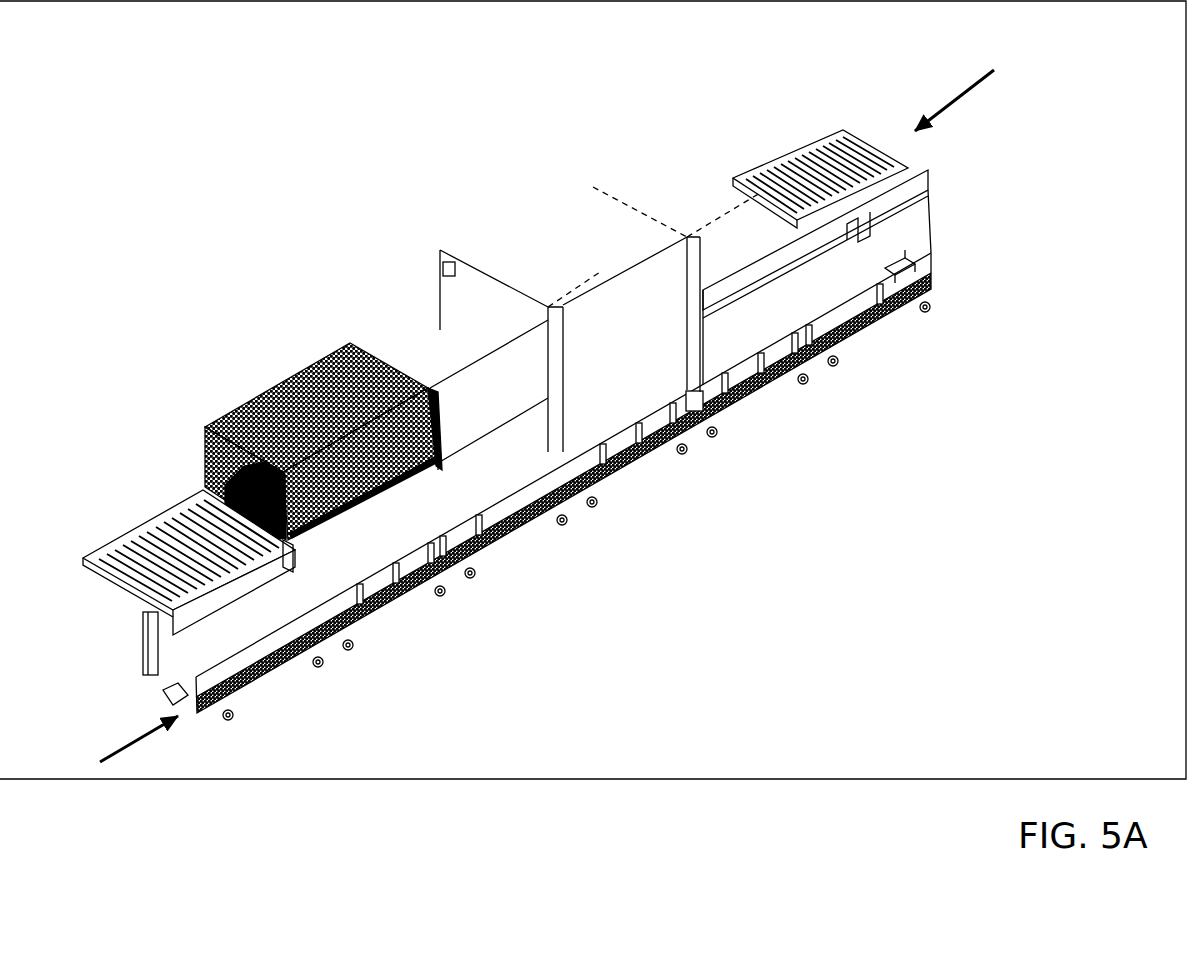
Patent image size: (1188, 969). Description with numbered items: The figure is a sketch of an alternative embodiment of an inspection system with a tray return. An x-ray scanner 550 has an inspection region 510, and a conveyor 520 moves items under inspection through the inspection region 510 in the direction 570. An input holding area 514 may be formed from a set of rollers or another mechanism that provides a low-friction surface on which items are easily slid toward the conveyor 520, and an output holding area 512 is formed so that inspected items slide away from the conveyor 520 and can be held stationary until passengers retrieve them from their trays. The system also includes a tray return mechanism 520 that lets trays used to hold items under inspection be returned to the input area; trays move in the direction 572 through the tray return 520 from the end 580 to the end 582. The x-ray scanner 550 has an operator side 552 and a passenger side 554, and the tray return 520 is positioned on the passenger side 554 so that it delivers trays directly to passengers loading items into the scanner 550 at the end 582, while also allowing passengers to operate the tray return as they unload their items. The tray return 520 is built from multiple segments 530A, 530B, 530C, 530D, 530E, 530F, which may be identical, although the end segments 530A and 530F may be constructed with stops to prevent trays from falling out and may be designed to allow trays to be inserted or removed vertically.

The inspection region 510 is at (445, 225).
The output holding area 512 is at (130, 548).
The input holding area 514 is at (832, 150).
The tray return mechanism 520 is at (215, 490).
The end segment 530A is at (300, 667).
The segment 530B is at (393, 612).
The segment 530C is at (508, 548).
The segment 530D is at (618, 483).
The segment 530E is at (728, 425).
The end segment 530F is at (852, 350).
The x-ray scanner 550 is at (553, 198).
The operator side 552 is at (282, 318).
The passenger side 554 is at (752, 545).
The direction 570 is at (994, 72).
The direction 572 is at (128, 748).
The end 580 is at (213, 717).
The end 582 is at (947, 288).